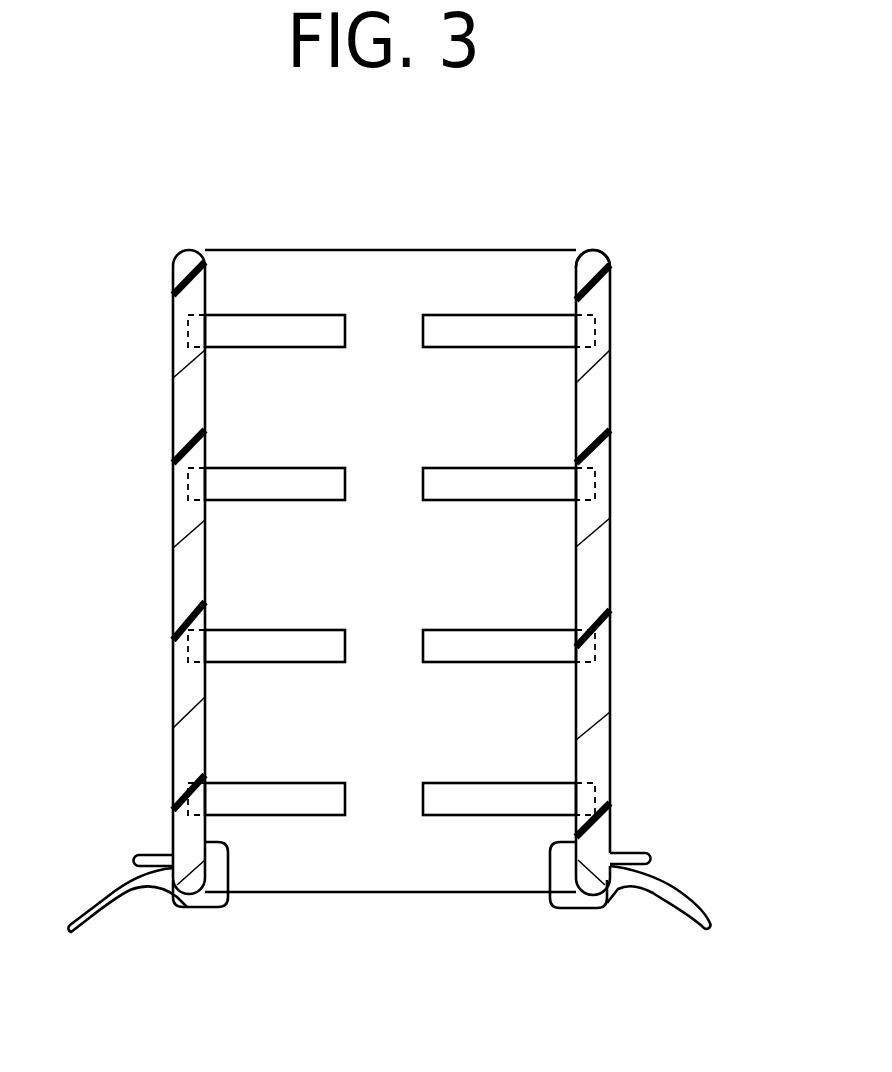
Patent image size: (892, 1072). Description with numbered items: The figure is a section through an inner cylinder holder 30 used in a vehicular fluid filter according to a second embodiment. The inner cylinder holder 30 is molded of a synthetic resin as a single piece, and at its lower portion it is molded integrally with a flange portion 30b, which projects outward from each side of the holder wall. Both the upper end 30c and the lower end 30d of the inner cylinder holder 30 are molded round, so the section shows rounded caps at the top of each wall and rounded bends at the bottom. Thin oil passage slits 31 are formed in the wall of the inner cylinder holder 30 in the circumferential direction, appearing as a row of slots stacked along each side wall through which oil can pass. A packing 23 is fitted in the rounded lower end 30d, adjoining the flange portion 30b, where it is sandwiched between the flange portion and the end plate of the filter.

The packing 23 is at (98, 897).
The inner cylinder holder 30 is at (600, 350).
The flange portion 30b is at (648, 856).
The upper end 30c is at (607, 253).
The lower end 30d is at (190, 880).
The oil passage slits 31 is at (487, 315).